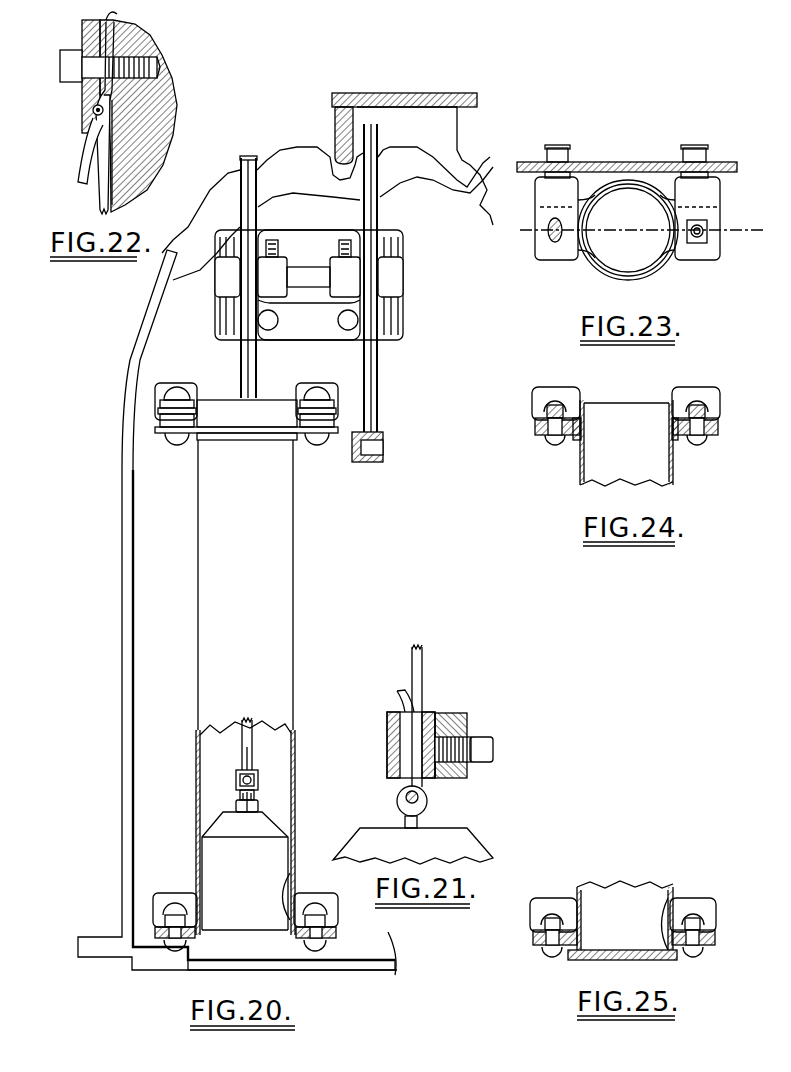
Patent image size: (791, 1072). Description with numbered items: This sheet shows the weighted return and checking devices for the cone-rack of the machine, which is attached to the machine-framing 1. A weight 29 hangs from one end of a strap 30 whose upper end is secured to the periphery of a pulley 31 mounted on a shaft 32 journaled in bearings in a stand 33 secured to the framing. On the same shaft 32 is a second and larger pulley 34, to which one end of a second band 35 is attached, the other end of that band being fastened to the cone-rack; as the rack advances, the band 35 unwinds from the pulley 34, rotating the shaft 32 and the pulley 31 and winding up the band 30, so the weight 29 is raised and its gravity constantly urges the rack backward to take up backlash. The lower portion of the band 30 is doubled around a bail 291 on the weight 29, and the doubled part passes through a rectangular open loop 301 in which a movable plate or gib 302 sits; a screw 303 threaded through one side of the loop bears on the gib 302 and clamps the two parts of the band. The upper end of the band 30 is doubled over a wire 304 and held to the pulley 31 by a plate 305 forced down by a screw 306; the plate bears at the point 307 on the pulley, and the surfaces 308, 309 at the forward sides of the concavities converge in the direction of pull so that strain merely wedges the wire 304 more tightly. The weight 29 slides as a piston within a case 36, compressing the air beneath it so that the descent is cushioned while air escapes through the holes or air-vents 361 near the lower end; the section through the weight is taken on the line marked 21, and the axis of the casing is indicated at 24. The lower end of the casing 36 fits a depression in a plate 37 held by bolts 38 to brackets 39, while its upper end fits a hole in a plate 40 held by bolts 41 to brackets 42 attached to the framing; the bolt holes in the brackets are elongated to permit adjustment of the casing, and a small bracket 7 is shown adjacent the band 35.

In FIG. 20, the housing / body wall 1 is at (121, 705).
In FIG. 23, the housing / body wall 1 is at (618, 162).
In FIG. 20, the bracket 7 is at (385, 455).
In FIG. 20, the valve stem 21 is at (248, 783).
In FIG. 23, the center line / axis 24 is at (627, 232).
In FIG. 20, the weight 29 is at (245, 871).
In FIG. 21, the weight 29 is at (456, 851).
In FIG. 20, the strap 30 is at (254, 759).
In FIG. 21, the strap 30 is at (424, 655).
In FIG. 22, the strap 30 is at (98, 192).
In FIG. 20, the pulley 31 is at (240, 365).
In FIG. 22, the pulley 31 is at (160, 102).
In FIG. 20, the shaft 32 is at (309, 285).
In FIG. 20, the stand 33 is at (413, 305).
In FIG. 20, the second pulley 34 is at (379, 205).
In FIG. 20, the second band 35 is at (372, 410).
In FIG. 20, the case 36 is at (245, 687).
In FIG. 23, the case 36 is at (591, 275).
In FIG. 24, the case 36 is at (578, 476).
In FIG. 25, the case 36 is at (578, 888).
In FIG. 20, the plate 37 is at (270, 951).
In FIG. 25, the plate 37 is at (577, 961).
In FIG. 20, the bolts 38 is at (323, 950).
In FIG. 25, the bolts 38 is at (550, 958).
In FIG. 20, the brackets 39 is at (158, 894).
In FIG. 25, the brackets 39 is at (532, 935).
In FIG. 20, the plate 40 is at (244, 436).
In FIG. 23, the plate 40 is at (669, 274).
In FIG. 24, the plate 40 is at (678, 446).
In FIG. 20, the bolts 41 is at (175, 437).
In FIG. 23, the bolts 41 is at (709, 228).
In FIG. 24, the bolts 41 is at (551, 441).
In FIG. 20, the brackets 42 is at (154, 420).
In FIG. 23, the brackets 42 is at (549, 254).
In FIG. 24, the brackets 42 is at (533, 423).
In FIG. 20, the bail 291 is at (260, 805).
In FIG. 21, the bail 291 is at (419, 820).
In FIG. 20, the rectangular open loop 301 is at (238, 785).
In FIG. 21, the rectangular open loop 301 is at (468, 720).
In FIG. 20, the movable plate or gib 302 is at (241, 771).
In FIG. 21, the movable plate or gib 302 is at (426, 712).
In FIG. 20, the screw 303 is at (256, 786).
In FIG. 21, the screw 303 is at (495, 750).
In FIG. 22, the wire 304 is at (93, 111).
In FIG. 22, the plate 305 is at (82, 32).
In FIG. 22, the screw 306 is at (59, 65).
In FIG. 22, the point 307 is at (114, 20).
In FIG. 22, the surface 308 is at (78, 135).
In FIG. 22, the surface 309 is at (113, 125).
In FIG. 20, the holes or air-vents 361 is at (284, 902).
In FIG. 25, the holes or air-vents 361 is at (666, 928).